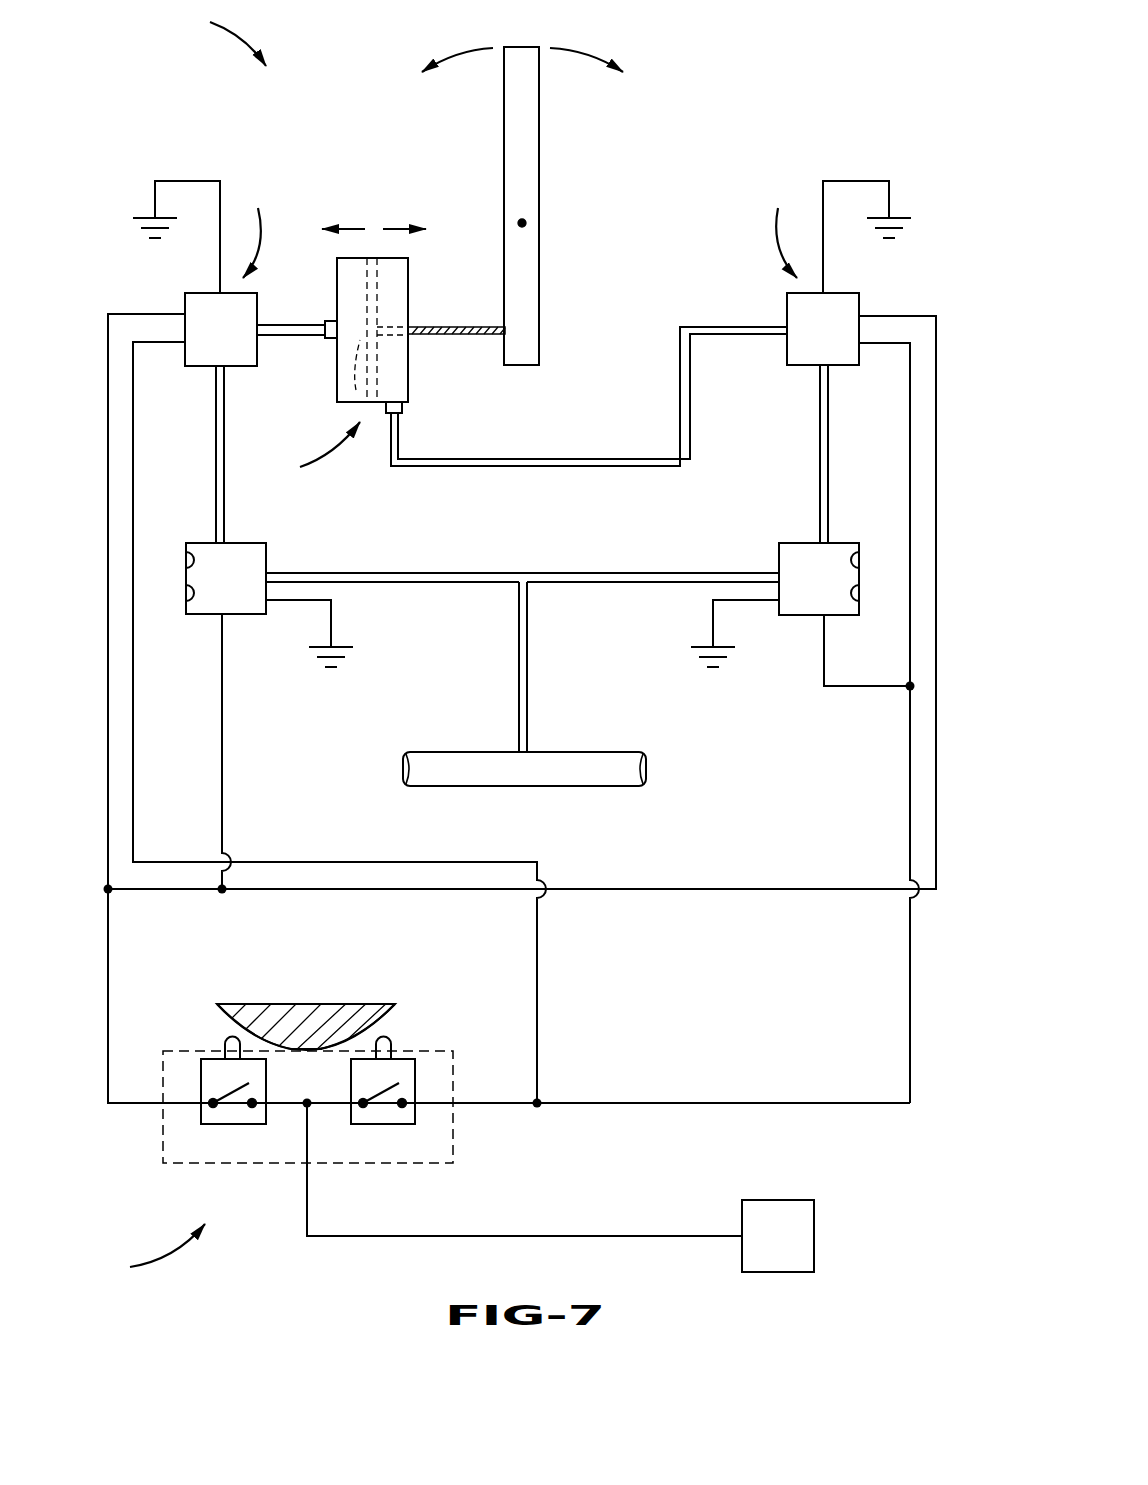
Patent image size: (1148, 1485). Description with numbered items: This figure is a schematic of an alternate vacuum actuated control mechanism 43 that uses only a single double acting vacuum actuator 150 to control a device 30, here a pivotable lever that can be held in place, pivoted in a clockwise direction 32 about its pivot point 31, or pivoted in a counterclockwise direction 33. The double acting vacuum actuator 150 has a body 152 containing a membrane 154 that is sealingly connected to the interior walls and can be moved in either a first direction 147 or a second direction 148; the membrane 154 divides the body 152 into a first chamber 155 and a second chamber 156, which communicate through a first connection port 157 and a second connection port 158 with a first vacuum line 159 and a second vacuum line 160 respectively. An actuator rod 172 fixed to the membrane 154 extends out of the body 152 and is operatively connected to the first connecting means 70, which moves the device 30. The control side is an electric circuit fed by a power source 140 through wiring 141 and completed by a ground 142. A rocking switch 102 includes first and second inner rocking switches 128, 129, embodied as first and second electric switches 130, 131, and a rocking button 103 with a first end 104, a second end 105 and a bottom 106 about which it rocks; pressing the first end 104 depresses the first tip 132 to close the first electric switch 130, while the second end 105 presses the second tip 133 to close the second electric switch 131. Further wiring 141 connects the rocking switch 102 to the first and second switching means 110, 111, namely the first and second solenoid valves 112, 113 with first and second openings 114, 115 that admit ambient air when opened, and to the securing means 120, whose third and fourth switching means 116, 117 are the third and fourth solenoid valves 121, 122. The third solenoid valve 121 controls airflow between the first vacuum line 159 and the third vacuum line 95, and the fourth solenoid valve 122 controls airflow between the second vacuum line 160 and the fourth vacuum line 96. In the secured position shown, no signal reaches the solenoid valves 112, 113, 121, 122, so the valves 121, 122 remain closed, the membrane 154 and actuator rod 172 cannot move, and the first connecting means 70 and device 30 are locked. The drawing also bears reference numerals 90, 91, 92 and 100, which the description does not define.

The device 30 is at (532, 138).
The pivot point 31 is at (520, 221).
The clockwise direction 32 is at (578, 48).
The counterclockwise direction 33 is at (465, 48).
The vacuum actuated control mechanism 43 is at (215, 30).
The first connecting means 70 is at (482, 336).
The drive shaft 90 is at (585, 755).
The shaft connection line 91 is at (528, 670).
The shaft surface 92 is at (465, 755).
The third vacuum line 95 is at (216, 463).
The fourth vacuum line 96 is at (818, 462).
The control circuit 100 is at (144, 1253).
The rocking switch 102 is at (455, 1138).
The rocking button 103 is at (305, 1006).
The first end 104 is at (228, 1003).
The second end 105 is at (388, 1003).
The bottom 106 is at (305, 1052).
The first switching means 110 is at (269, 554).
The second switching means 111 is at (773, 555).
The first solenoid valve 112 is at (256, 545).
The second solenoid valve 113 is at (788, 545).
The first opening 114 is at (186, 560).
The second opening 115 is at (859, 560).
The third switching means 116 is at (207, 363).
The fourth switching means 117 is at (837, 364).
The securing means 120 is at (522, 307).
The third solenoid valve 121 is at (195, 360).
The fourth solenoid valve 122 is at (850, 360).
The first inner rocking switch 128 is at (178, 1135).
The second inner rocking switch 129 is at (382, 1135).
The first electric switch 130 is at (222, 1124).
The second electric switch 131 is at (360, 1124).
The first tip 132 is at (225, 1043).
The second tip 133 is at (391, 1043).
The power source 140 is at (778, 1236).
The wiring 141 is at (110, 316).
The ground 142 is at (153, 218).
The first direction 147 is at (352, 228).
The second direction 148 is at (392, 228).
The double acting vacuum actuator 150 is at (382, 370).
The body 152 is at (410, 392).
The membrane 154 is at (378, 285).
The first chamber 155 is at (355, 395).
The second chamber 156 is at (395, 307).
The first connection port 157 is at (328, 325).
The second connection port 158 is at (402, 413).
The first vacuum line 159 is at (283, 337).
The second vacuum line 160 is at (580, 466).
The actuator rod 172 is at (392, 340).